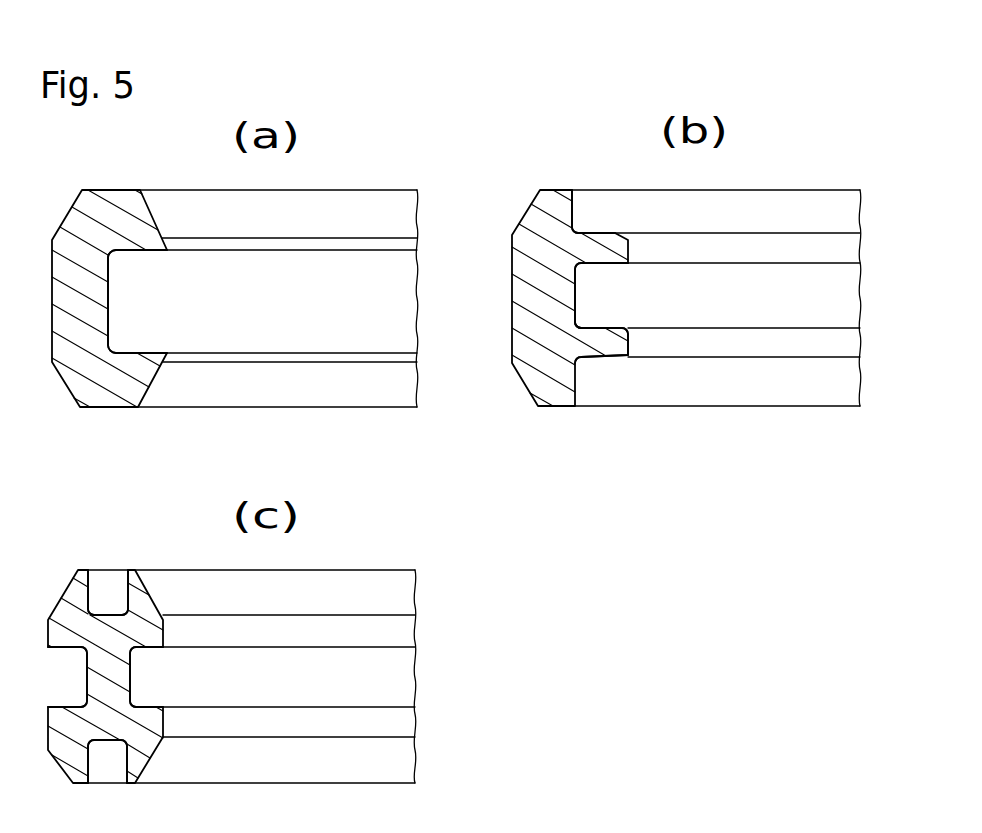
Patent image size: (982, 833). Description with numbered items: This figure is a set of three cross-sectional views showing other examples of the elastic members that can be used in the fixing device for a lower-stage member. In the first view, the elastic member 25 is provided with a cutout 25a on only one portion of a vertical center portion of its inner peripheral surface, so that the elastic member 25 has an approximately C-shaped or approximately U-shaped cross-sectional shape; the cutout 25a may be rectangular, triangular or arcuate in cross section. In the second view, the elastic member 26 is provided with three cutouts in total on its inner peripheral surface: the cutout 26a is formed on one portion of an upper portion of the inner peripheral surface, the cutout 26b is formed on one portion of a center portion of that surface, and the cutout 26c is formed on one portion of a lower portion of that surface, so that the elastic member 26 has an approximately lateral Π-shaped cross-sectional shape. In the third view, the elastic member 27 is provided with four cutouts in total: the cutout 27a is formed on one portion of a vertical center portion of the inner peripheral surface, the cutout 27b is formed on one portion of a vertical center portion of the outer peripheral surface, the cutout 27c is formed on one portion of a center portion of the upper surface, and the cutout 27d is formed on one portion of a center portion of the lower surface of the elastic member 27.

The elastic member 25 is at (98, 208).
The cutout 25a is at (110, 307).
The elastic member 26 is at (537, 247).
The cutout 26a is at (577, 222).
The cutout 26b is at (584, 312).
The cutout 26c is at (577, 378).
The elastic member 27 is at (68, 612).
The cutout 27a is at (130, 675).
The cutout 27b is at (87, 675).
The cutout 27c is at (108, 612).
The cutout 27d is at (102, 742).